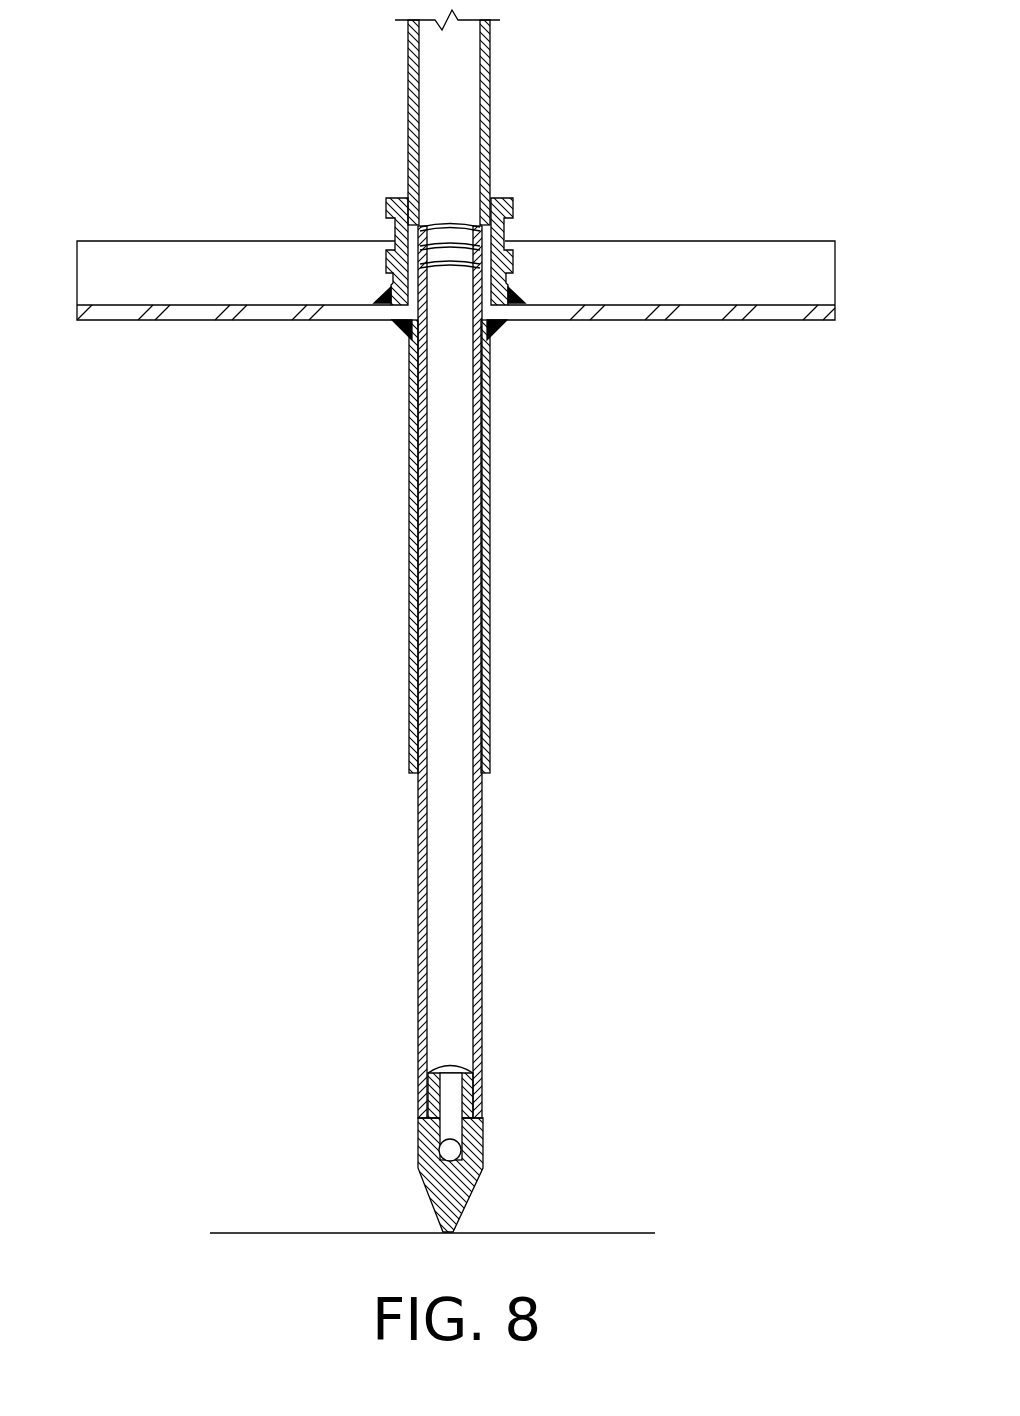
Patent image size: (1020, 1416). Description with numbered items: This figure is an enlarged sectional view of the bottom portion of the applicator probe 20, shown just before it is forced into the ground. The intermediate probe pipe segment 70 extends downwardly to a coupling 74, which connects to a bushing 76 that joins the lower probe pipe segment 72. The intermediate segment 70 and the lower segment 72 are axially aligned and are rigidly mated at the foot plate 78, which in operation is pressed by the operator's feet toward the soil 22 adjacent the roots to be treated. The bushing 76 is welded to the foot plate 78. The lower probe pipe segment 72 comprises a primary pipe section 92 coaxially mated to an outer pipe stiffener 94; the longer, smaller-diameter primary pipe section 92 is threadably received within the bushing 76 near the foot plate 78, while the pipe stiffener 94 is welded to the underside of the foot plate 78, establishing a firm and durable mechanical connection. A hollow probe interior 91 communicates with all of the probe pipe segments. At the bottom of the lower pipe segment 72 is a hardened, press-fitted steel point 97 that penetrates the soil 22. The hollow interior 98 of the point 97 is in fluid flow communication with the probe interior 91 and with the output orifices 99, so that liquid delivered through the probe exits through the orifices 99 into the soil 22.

The probe 20 is at (222, 176).
The intermediate probe pipe segment 70 is at (490, 50).
The coupling 74 is at (505, 200).
The foot plate 78 is at (700, 303).
The bushing 76 is at (485, 292).
The outer pipe stiffener 94 is at (408, 487).
The primary pipe section 92 is at (418, 893).
The hollow probe interior 91 is at (452, 630).
The lower probe pipe segment 72 is at (490, 476).
The steel point 97 is at (455, 1205).
The hollow interior 98 is at (443, 1093).
The output orifices 99 is at (445, 1150).
The soil 22 is at (292, 1216).